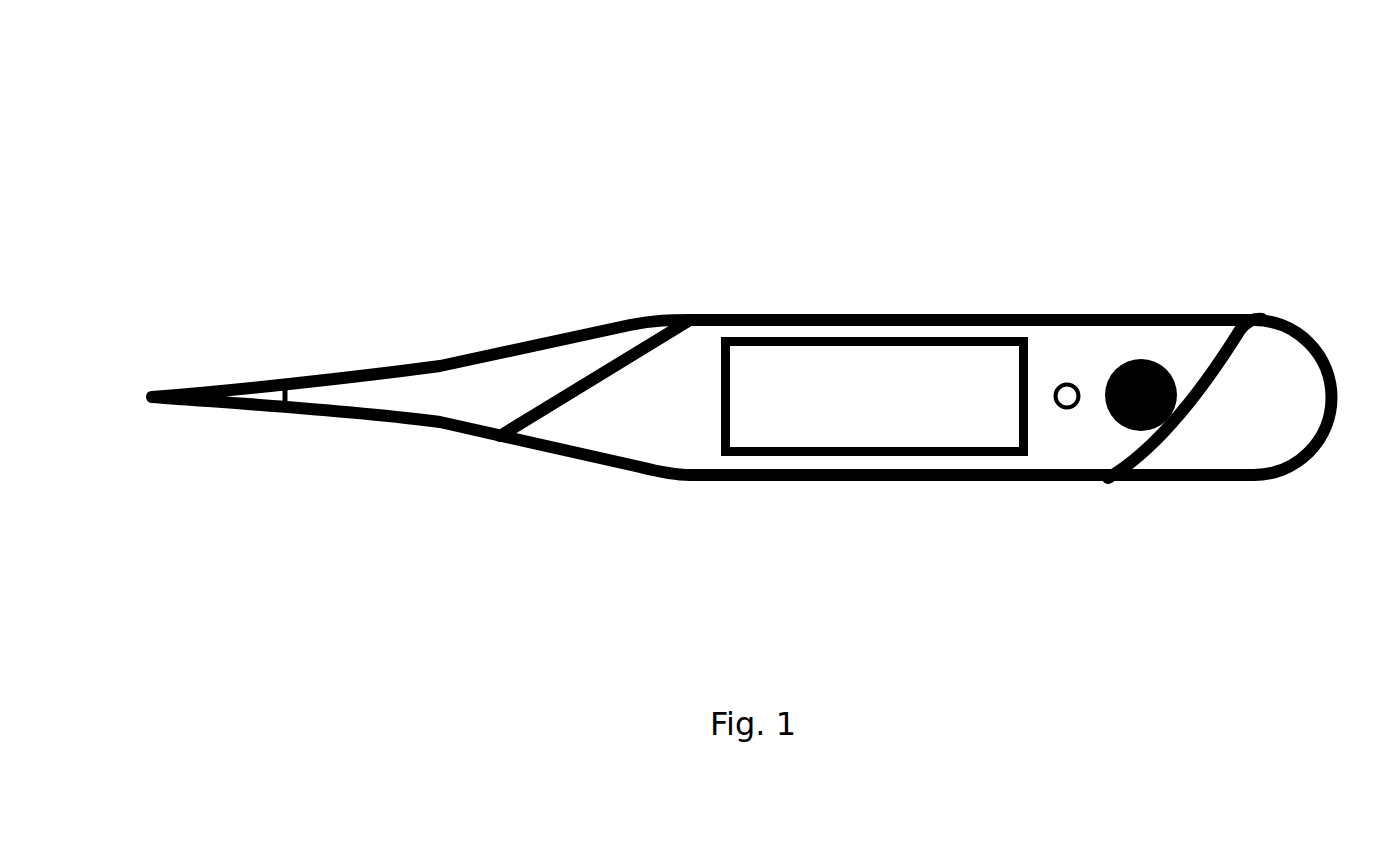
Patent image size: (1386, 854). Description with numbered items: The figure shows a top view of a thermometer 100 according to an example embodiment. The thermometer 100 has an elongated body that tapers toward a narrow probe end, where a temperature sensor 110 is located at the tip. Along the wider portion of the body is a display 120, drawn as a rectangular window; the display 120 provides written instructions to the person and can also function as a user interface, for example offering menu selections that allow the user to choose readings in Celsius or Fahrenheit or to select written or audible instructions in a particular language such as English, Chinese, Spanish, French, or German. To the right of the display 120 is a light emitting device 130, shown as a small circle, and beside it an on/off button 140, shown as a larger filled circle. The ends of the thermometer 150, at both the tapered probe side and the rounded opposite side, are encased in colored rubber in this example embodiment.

The thermometer 100 is at (287, 193).
The temperature sensor 110 is at (250, 400).
The display 120 is at (822, 367).
The light emitting device 130 is at (1066, 386).
The on/off button 140 is at (1120, 427).
The ends of the thermometer 150 is at (537, 380).